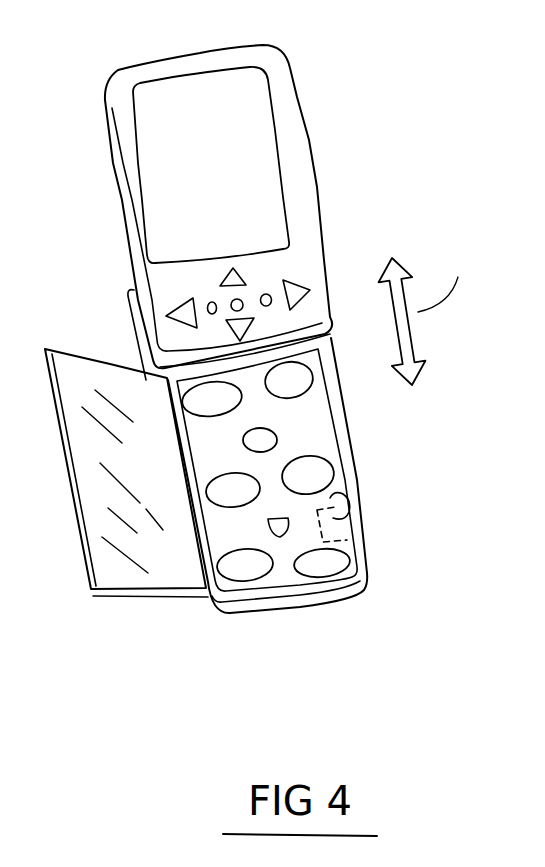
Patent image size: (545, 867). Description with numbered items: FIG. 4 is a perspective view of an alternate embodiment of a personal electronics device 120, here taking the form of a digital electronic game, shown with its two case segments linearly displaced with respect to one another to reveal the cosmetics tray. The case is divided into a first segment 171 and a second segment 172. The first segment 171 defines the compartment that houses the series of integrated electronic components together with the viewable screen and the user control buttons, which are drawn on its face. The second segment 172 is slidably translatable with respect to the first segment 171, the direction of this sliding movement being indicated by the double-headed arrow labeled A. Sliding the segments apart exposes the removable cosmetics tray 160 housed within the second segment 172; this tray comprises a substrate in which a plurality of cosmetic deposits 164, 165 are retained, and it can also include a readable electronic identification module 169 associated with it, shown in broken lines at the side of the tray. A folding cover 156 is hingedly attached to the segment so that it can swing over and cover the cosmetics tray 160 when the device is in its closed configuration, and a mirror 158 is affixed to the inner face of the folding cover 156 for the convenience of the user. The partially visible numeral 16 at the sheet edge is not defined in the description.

The personal electronics device 120 is at (476, 154).
The first segment 171 is at (313, 153).
The cosmetics tray 160 is at (333, 422).
The keypad 16 is at (340, 393).
The cosmetic deposit 164 is at (320, 568).
The cosmetic deposit 165 is at (278, 530).
The readable electronic identification module 169 is at (332, 507).
The second segment 172 is at (212, 600).
The mirror 158 is at (90, 393).
The folding cover 156 is at (135, 593).